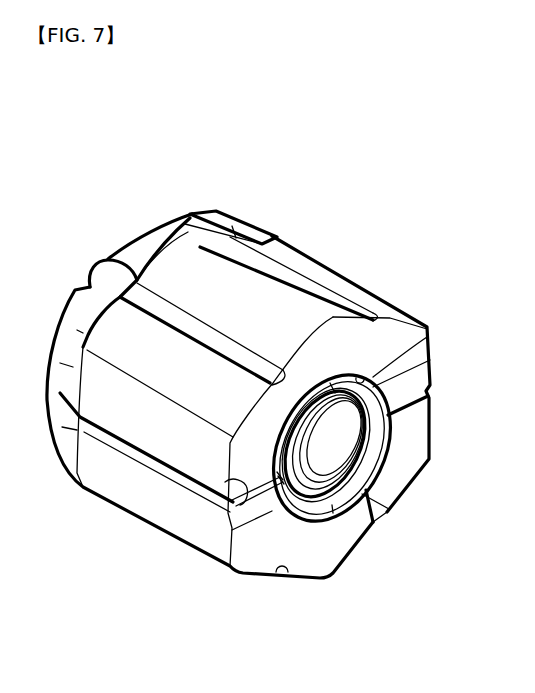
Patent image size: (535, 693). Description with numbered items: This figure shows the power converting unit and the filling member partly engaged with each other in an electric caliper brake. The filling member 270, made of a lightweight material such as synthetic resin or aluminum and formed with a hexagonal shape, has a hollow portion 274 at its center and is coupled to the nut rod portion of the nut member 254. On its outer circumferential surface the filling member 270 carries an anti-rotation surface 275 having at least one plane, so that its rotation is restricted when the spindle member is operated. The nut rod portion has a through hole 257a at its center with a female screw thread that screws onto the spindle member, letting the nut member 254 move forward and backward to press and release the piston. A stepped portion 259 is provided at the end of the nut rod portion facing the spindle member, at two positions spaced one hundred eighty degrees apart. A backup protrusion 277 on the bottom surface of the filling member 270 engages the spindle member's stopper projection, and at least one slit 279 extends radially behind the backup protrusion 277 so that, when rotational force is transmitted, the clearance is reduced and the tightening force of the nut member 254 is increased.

The filling member 270 is at (441, 304).
The nut member 254 is at (251, 203).
The anti-rotation surface 275 is at (270, 276).
The hollow portion 274 is at (428, 337).
The backup protrusion 277 is at (232, 500).
The through hole 257a is at (365, 432).
The slit 279 is at (388, 508).
The stepped portion 259 is at (332, 510).